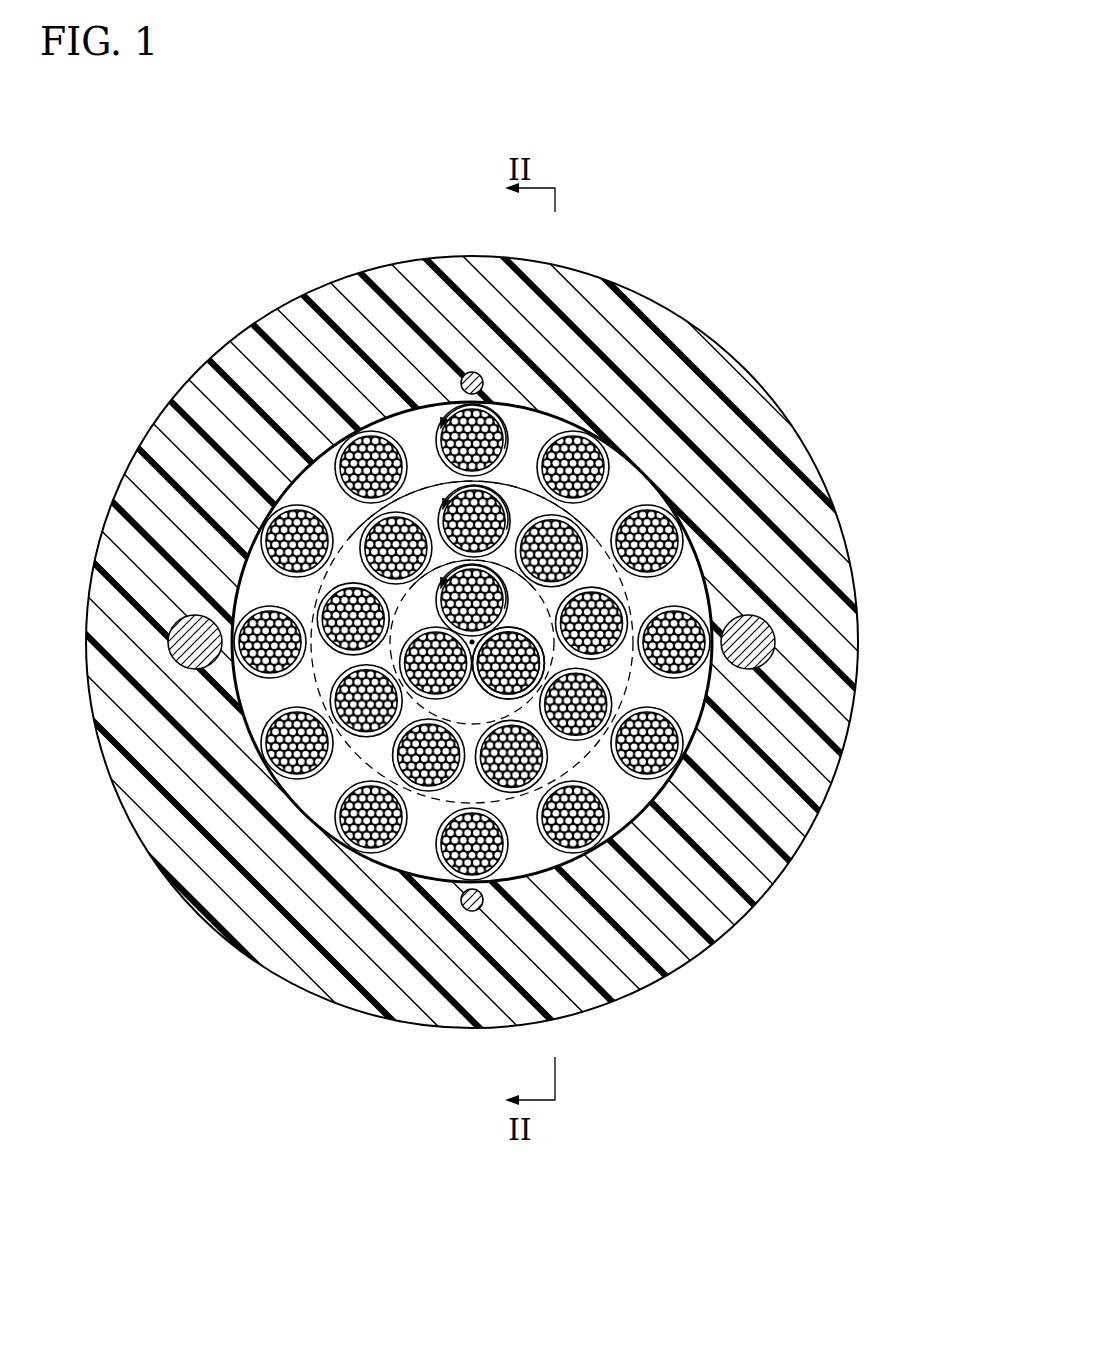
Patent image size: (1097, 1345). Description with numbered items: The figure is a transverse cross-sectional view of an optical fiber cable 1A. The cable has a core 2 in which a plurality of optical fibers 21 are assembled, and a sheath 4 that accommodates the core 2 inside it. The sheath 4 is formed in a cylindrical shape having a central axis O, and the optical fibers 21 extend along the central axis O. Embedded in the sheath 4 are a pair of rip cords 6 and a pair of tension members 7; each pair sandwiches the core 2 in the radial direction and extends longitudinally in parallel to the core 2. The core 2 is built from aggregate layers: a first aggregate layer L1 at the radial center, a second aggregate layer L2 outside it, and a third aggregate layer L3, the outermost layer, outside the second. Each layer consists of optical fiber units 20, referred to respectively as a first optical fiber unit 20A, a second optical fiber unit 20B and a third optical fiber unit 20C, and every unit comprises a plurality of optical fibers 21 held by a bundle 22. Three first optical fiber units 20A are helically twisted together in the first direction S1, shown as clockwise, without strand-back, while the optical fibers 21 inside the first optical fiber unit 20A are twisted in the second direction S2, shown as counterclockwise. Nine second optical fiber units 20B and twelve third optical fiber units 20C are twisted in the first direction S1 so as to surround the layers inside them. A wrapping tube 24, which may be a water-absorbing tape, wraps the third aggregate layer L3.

The optical fiber cable 1A is at (205, 200).
The core 2 is at (675, 505).
The sheath 4 is at (647, 362).
The rip cord 6 is at (470, 372).
The tension member 7 is at (776, 655).
The optical fiber unit 20 is at (597, 739).
The first optical fiber unit 20A is at (888, 468).
The second optical fiber unit 20B is at (588, 742).
The third optical fiber unit 20C is at (568, 860).
The optical fiber 21 is at (515, 642).
The bundle 22 is at (545, 642).
The wrapping tube 24 is at (472, 913).
The central axis O is at (472, 642).
The first aggregate layer L1 is at (424, 571).
The second aggregate layer L2 is at (340, 541).
The third aggregate layer L3 is at (237, 556).
The first direction S1 is at (400, 416).
The second direction S2 is at (458, 408).